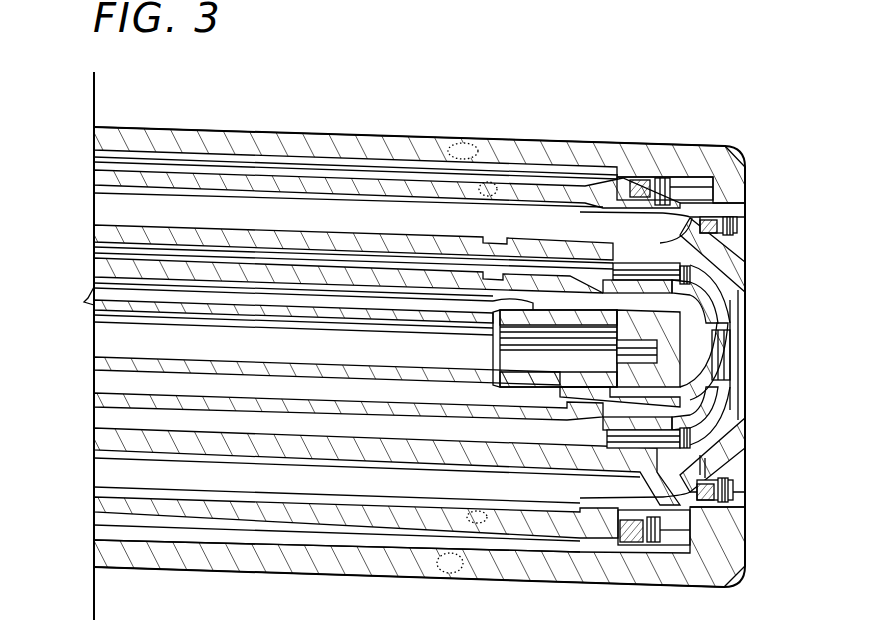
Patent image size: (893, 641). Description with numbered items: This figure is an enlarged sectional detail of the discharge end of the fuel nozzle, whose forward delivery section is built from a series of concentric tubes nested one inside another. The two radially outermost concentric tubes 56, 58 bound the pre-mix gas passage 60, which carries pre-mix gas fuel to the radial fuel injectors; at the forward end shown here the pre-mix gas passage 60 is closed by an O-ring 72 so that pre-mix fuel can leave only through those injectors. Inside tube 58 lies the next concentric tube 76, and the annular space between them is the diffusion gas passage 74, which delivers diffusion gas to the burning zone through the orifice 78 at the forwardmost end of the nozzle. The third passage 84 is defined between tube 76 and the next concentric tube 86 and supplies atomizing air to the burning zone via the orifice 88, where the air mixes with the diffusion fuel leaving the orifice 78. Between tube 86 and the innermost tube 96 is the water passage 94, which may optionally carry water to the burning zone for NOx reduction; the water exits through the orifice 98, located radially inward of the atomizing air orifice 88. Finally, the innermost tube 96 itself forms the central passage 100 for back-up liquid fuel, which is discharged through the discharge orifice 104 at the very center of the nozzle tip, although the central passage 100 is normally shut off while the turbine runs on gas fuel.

The outermost concentric tube 56 is at (268, 560).
The concentric tube 58 is at (218, 507).
The pre-mix gas passage 60 is at (180, 528).
The O-ring 72 is at (628, 547).
The diffusion gas passage 74 is at (135, 473).
The concentric tube 76 is at (247, 447).
The orifice 78 is at (743, 483).
The third passage 84 is at (393, 458).
The concentric tube 86 is at (277, 400).
The orifice 88 is at (733, 412).
The water passage 94 is at (118, 382).
The innermost tube 96 is at (112, 345).
The orifice 98 is at (710, 387).
The central passage 100 is at (314, 358).
The discharge orifice 104 is at (727, 360).